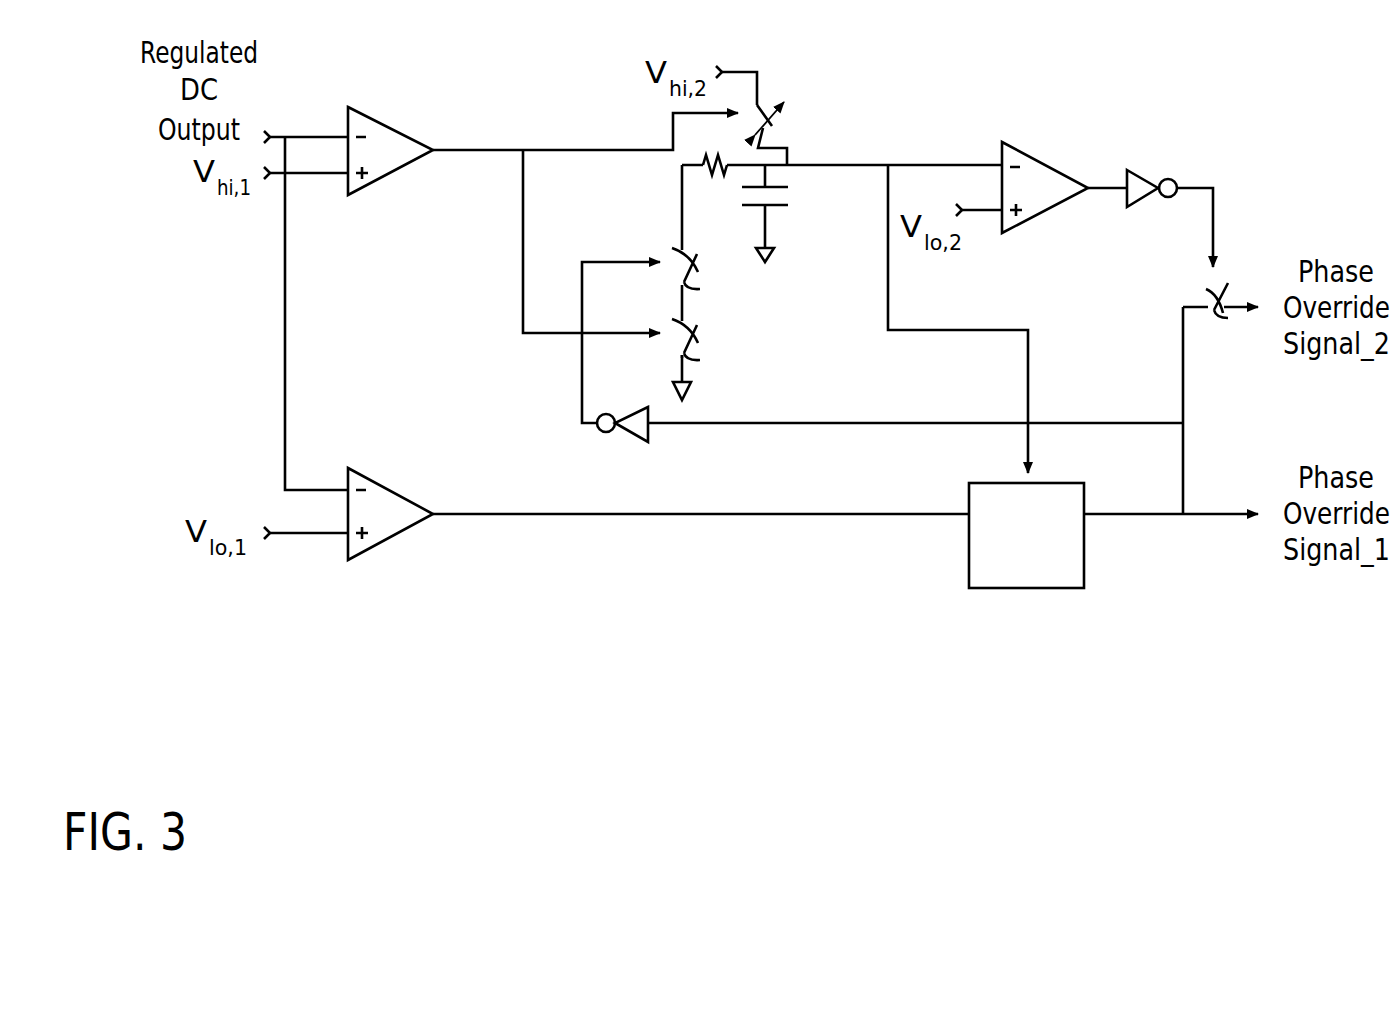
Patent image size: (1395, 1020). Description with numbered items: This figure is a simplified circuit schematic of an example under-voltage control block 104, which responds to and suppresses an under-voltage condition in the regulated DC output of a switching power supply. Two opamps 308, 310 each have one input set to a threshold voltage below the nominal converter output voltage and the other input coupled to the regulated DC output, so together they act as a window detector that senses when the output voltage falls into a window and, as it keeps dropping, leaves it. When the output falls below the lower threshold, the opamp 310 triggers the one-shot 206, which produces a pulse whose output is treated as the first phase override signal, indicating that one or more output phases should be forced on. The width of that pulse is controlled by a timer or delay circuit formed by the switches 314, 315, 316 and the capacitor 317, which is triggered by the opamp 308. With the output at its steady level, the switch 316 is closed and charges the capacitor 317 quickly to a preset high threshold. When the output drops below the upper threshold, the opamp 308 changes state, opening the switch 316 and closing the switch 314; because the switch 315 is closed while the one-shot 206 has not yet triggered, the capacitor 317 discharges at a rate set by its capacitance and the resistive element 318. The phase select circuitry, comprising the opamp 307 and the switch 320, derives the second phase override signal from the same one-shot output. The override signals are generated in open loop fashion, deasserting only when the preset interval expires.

The under-voltage control block 104 is at (352, 586).
The one-shot 206 is at (1025, 590).
The opamp 307 is at (1046, 160).
The opamp 308 is at (391, 121).
The opamp 310 is at (390, 488).
The switch 314 is at (711, 335).
The switch 315 is at (711, 277).
The switch 316 is at (777, 102).
The capacitor 317 is at (793, 193).
The resistive element 318 is at (703, 160).
The switch 320 is at (1228, 272).